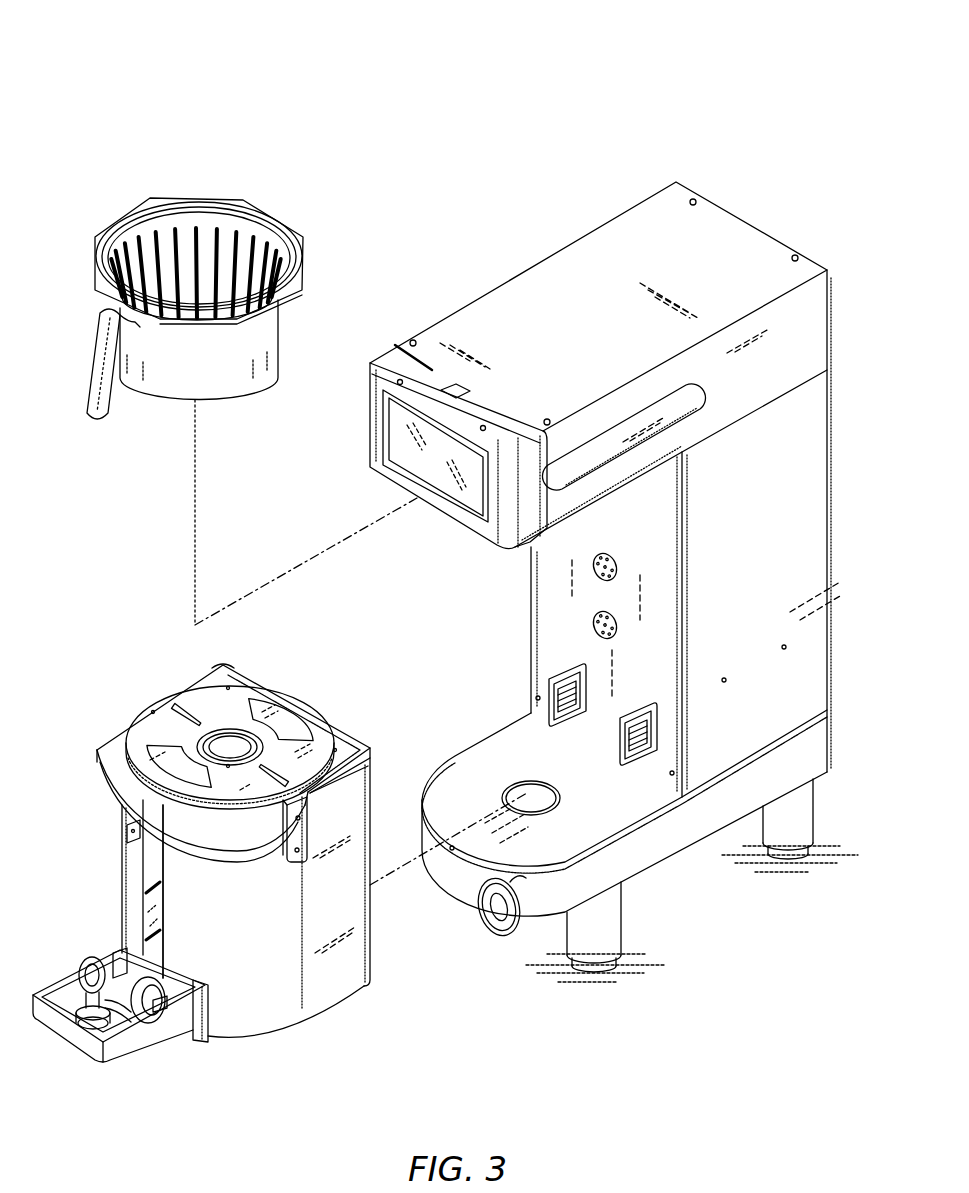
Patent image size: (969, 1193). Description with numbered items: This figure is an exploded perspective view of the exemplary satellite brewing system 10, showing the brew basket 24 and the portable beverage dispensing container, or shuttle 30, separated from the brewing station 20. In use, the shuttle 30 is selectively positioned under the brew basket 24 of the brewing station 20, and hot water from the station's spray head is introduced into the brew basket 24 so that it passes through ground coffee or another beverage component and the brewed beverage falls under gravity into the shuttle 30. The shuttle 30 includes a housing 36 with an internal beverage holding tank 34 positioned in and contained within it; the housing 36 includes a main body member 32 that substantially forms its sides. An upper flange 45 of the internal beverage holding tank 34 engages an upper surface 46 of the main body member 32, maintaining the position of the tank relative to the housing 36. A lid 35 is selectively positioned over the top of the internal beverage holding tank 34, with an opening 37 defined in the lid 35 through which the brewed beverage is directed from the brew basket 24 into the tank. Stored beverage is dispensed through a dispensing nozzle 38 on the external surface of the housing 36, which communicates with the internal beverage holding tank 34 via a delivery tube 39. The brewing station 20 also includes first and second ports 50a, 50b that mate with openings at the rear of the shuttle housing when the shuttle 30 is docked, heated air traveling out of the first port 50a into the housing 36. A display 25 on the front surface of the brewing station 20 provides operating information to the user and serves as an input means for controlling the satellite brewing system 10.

The satellite brewing system 10 is at (222, 74).
The brewing station 20 is at (829, 483).
The brew basket 24 is at (95, 355).
The display 25 is at (403, 433).
The portable beverage dispensing container 30 is at (120, 877).
The main body member 32 is at (130, 904).
The internal beverage holding tank 34 is at (230, 670).
The lid 35 is at (147, 727).
The housing 36 is at (250, 990).
The opening 37 is at (215, 732).
The dispensing nozzle 38 is at (88, 1030).
The delivery tube 39 is at (145, 1024).
The upper flange 45 is at (343, 744).
The upper surface 46 is at (372, 776).
The first port 50a is at (547, 690).
The second port 50b is at (670, 744).